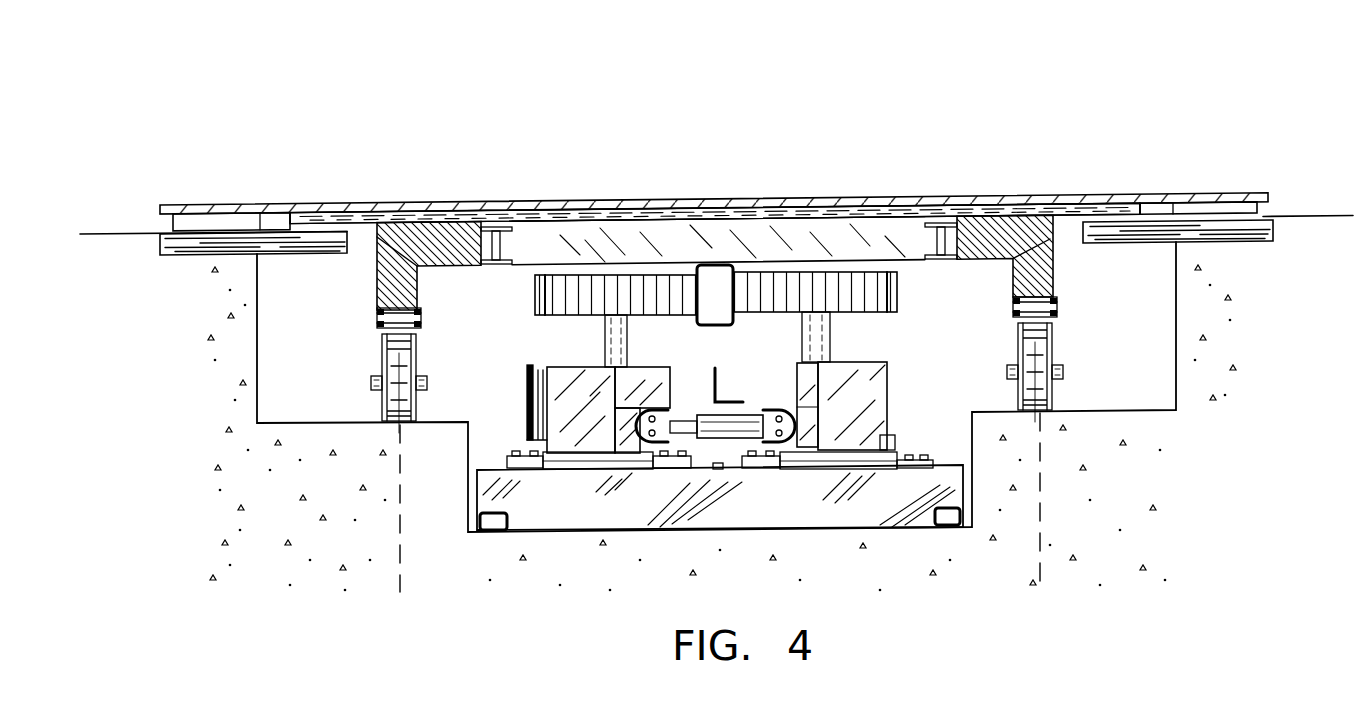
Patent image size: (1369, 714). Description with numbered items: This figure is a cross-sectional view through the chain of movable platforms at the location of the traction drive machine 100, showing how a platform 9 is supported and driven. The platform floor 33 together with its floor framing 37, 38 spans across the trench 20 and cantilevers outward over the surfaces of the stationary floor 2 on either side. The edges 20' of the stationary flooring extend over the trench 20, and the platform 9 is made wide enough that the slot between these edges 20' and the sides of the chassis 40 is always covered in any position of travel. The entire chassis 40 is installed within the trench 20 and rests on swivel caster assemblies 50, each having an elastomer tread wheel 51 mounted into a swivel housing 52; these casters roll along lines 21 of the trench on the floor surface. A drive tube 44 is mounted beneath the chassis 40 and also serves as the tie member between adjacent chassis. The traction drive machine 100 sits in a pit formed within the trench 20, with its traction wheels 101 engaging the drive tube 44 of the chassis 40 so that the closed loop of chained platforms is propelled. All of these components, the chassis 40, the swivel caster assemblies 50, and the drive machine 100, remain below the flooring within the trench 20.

The stationary floor 2 is at (104, 233).
The platform 9 is at (517, 160).
The trench 20 is at (716, 387).
The edge of the flooring 20' is at (716, 158).
The lines of the trench 21 is at (401, 548).
The platform floor 33 is at (1052, 208).
The floor framing 37 is at (964, 212).
The floor framing 38 is at (964, 212).
The chassis 40 is at (890, 180).
The drive tube 44 is at (726, 334).
The swivel caster assembly 50 is at (766, 360).
The elastomer tread wheel 51 is at (1042, 358).
The swivel housing 52 is at (1060, 387).
The traction drive machine 100 is at (565, 343).
The traction wheels 101 is at (633, 287).